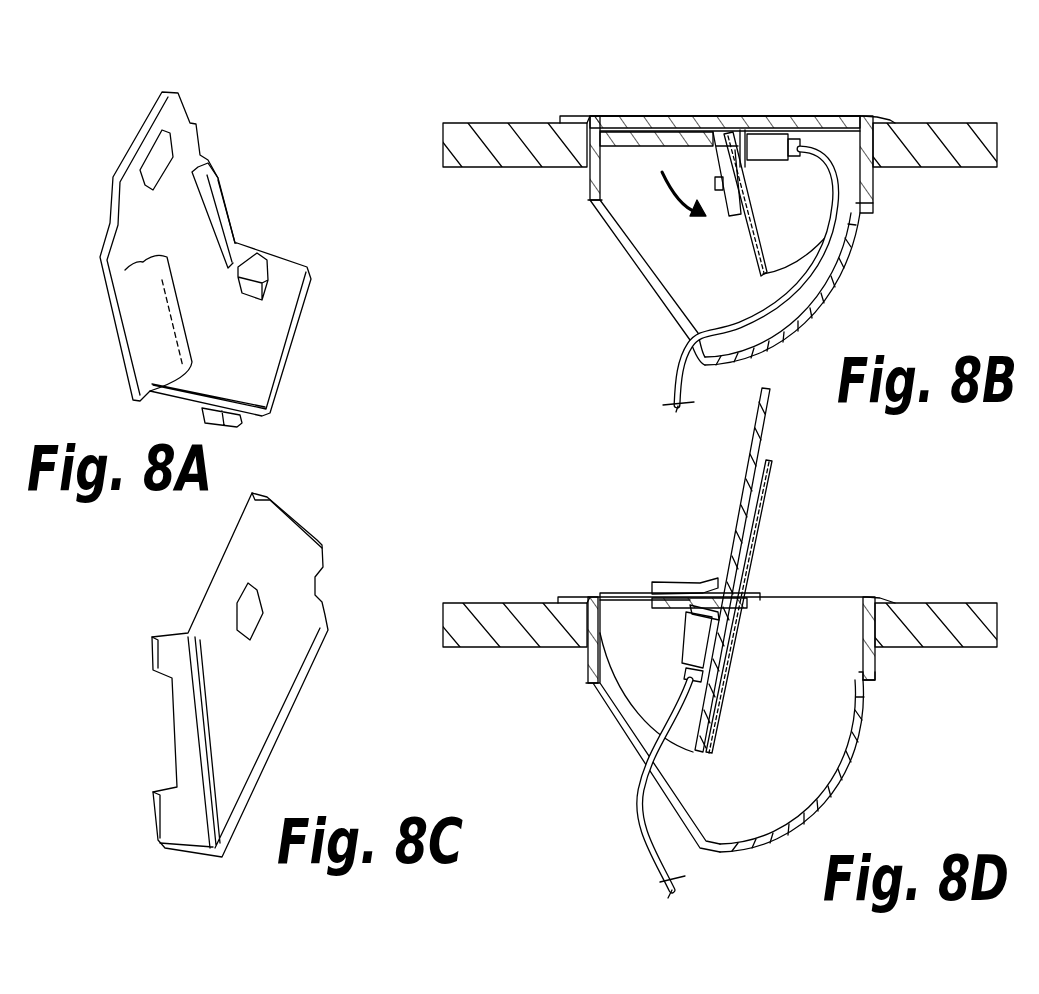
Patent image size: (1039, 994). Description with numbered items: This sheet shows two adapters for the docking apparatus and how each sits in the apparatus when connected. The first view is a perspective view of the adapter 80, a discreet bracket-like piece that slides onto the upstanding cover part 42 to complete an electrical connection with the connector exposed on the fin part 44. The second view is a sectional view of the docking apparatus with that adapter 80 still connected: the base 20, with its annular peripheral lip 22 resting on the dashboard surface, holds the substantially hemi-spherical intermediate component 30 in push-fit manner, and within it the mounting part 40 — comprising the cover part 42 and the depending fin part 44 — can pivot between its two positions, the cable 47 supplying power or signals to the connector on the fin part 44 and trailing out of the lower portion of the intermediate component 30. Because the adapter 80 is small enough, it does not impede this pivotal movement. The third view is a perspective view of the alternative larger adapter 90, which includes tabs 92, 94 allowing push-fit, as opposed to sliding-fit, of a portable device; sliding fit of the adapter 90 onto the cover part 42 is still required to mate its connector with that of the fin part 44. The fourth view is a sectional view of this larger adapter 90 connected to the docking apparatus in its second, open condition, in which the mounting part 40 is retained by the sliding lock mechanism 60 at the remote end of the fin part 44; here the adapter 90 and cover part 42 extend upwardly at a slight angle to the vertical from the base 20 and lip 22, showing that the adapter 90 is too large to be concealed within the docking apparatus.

In FIG. 8B, the base 20 is at (876, 102).
In FIG. 8D, the base 20 is at (881, 583).
In FIG. 8B, the annular peripheral lip 22 is at (893, 118).
In FIG. 8D, the annular peripheral lip 22 is at (900, 600).
In FIG. 8A, the intermediate component 30 is at (242, 184).
In FIG. 8B, the intermediate component 30 is at (863, 118).
In FIG. 8D, the intermediate component 30 is at (866, 593).
In FIG. 8B, the mounting part 40 is at (764, 106).
In FIG. 8B, the cover part 42 is at (637, 125).
In FIG. 8D, the cover part 42 is at (750, 518).
In FIG. 8D, the fin part 44 is at (670, 602).
In FIG. 8B, the cable 47 is at (673, 383).
In FIG. 8D, the cable 47 is at (650, 847).
In FIG. 8D, the sliding lock mechanism 60 is at (623, 593).
In FIG. 8B, the adapter 80 is at (682, 131).
In FIG. 8B, the alternative adapter 90 is at (762, 203).
In FIG. 8C, the alternative adapter 90 is at (262, 700).
In FIG. 8D, the alternative adapter 90 is at (740, 485).
In FIG. 8C, the tab 92 is at (293, 520).
In FIG. 8C, the tab 94 is at (152, 653).